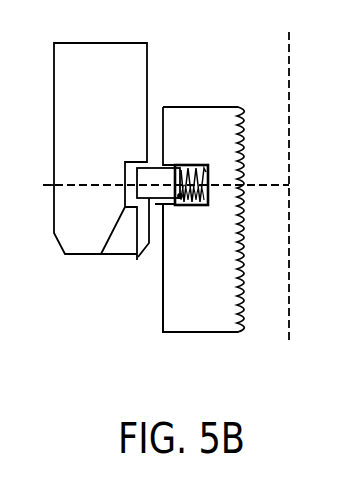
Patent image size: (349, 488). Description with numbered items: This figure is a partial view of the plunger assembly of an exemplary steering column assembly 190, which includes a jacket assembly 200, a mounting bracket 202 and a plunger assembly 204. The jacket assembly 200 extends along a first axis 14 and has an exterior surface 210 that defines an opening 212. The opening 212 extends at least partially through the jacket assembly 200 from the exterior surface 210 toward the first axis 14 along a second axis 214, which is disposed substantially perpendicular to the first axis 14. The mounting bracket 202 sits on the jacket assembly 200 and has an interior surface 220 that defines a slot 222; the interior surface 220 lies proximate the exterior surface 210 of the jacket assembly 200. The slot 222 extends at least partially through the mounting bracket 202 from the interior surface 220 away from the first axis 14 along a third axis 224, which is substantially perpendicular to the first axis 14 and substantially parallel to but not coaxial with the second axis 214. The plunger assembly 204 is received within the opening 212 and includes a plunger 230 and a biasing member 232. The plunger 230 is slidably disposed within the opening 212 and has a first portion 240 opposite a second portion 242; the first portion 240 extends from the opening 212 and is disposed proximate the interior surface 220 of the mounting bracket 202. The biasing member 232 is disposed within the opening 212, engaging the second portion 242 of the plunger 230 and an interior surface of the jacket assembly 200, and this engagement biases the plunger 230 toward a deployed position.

The first axis 14 is at (289, 288).
The steering column assembly 190 is at (93, 317).
The jacket assembly 200 is at (215, 107).
The mounting bracket 202 is at (88, 60).
The plunger assembly 204 is at (178, 217).
The exterior surface 210 is at (160, 297).
The opening 212 is at (147, 158).
The second axis 214 is at (240, 190).
The interior surface 220 is at (150, 53).
The slot 222 is at (118, 226).
The third axis 224 is at (43, 185).
The plunger 230 is at (175, 181).
The biasing member 232 is at (190, 167).
The first portion 240 is at (136, 257).
The second portion 242 is at (186, 206).